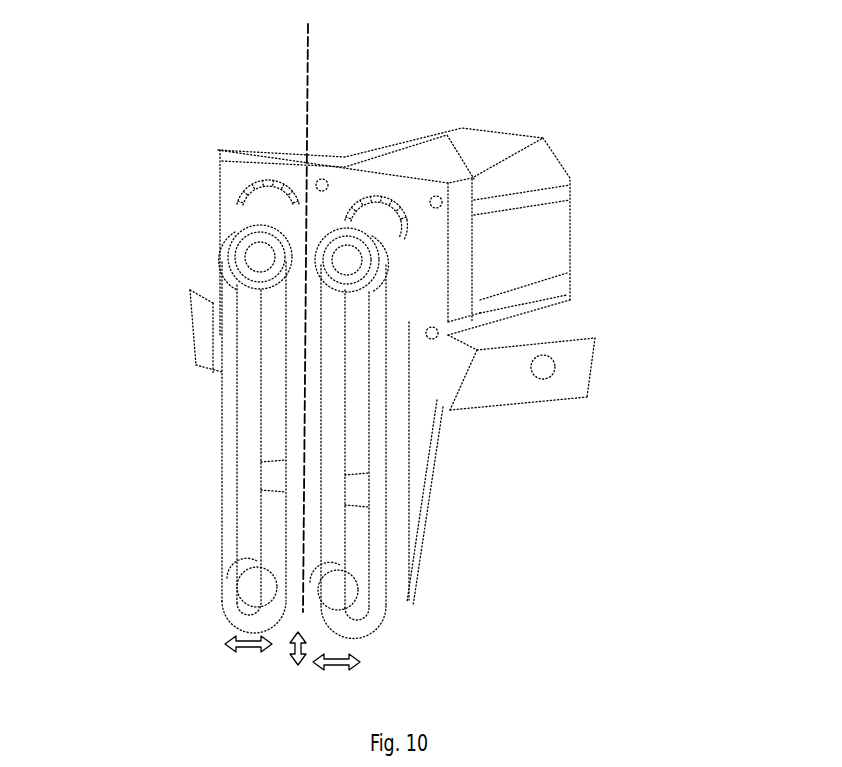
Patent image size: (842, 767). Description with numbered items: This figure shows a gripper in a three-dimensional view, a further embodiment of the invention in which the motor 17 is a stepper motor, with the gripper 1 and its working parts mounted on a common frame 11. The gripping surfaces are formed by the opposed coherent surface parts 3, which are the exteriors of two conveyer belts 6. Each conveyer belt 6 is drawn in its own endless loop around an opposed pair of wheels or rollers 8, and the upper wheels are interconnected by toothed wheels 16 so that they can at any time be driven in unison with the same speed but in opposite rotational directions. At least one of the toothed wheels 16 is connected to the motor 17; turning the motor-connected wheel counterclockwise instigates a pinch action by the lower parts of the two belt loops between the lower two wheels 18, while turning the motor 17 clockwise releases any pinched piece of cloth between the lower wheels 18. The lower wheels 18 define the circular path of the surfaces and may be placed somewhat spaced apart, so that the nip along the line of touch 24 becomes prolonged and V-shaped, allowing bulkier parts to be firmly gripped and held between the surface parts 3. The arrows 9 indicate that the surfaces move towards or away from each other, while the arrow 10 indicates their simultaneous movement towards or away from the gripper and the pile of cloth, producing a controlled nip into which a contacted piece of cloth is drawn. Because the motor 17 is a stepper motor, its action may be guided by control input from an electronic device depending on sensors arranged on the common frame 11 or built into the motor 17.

The handling device 1 is at (658, 366).
The surface part 3 is at (318, 626).
The conveyer belt 6 is at (217, 422).
The wheel or roller 8 is at (236, 247).
The arrow 9 is at (233, 650).
The arrow 10 is at (290, 660).
The common frame 11 is at (435, 220).
The toothed wheel 16 is at (287, 190).
The motor 17 is at (425, 148).
The lower wheel 18 is at (250, 598).
The line of touch 24 is at (305, 34).